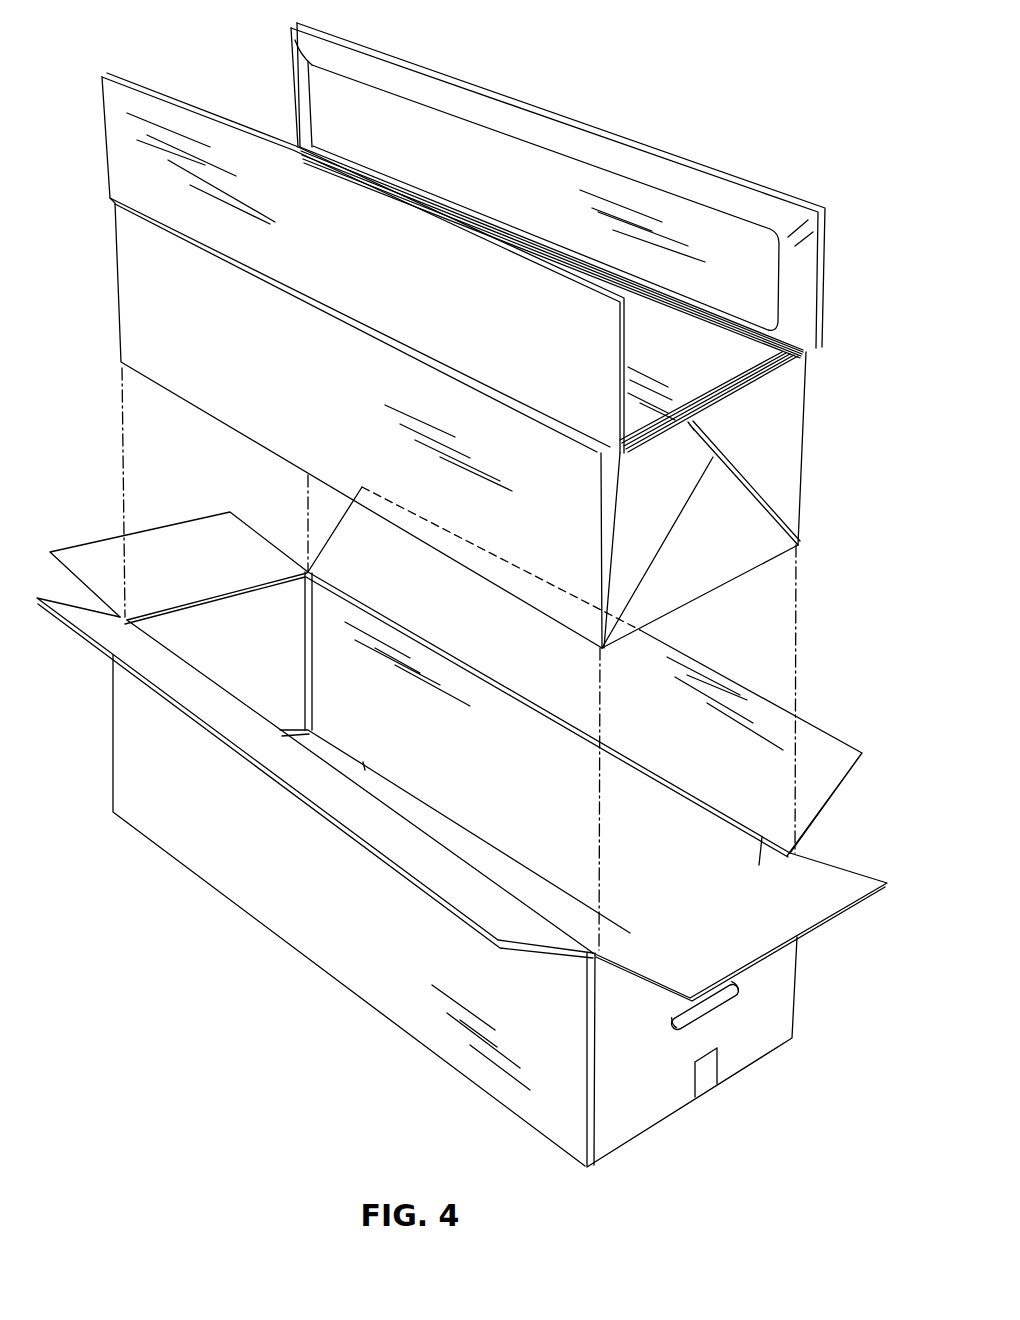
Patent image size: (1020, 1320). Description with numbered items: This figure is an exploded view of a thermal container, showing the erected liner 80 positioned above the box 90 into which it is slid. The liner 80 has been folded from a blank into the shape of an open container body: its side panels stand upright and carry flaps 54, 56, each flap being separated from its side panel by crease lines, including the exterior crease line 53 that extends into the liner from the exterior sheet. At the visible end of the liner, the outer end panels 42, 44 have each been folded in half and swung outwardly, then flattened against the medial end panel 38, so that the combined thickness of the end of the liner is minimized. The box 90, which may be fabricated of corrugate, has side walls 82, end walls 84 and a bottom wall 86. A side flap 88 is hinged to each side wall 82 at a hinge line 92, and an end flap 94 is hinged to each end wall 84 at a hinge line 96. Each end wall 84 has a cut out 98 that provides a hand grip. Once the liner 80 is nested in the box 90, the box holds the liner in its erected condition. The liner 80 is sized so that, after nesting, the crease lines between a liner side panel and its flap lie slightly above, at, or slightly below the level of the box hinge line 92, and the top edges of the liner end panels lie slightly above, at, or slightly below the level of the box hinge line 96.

The medial end panel 38 is at (699, 553).
The outer end panel 42 is at (633, 509).
The outer end panel 44 is at (747, 448).
The exterior crease line 53 is at (350, 323).
The flap 54 is at (504, 198).
The flap 56 is at (319, 255).
The liner 80 is at (850, 360).
The side wall 82 is at (190, 820).
The end wall 84 is at (638, 1110).
The bottom wall 86 is at (452, 838).
The side flap 88 is at (810, 750).
The box 90 is at (270, 948).
The hinge line 92 is at (638, 767).
The end flap 94 is at (192, 537).
The hinge line 96 is at (243, 593).
The cut out 98 is at (715, 1017).